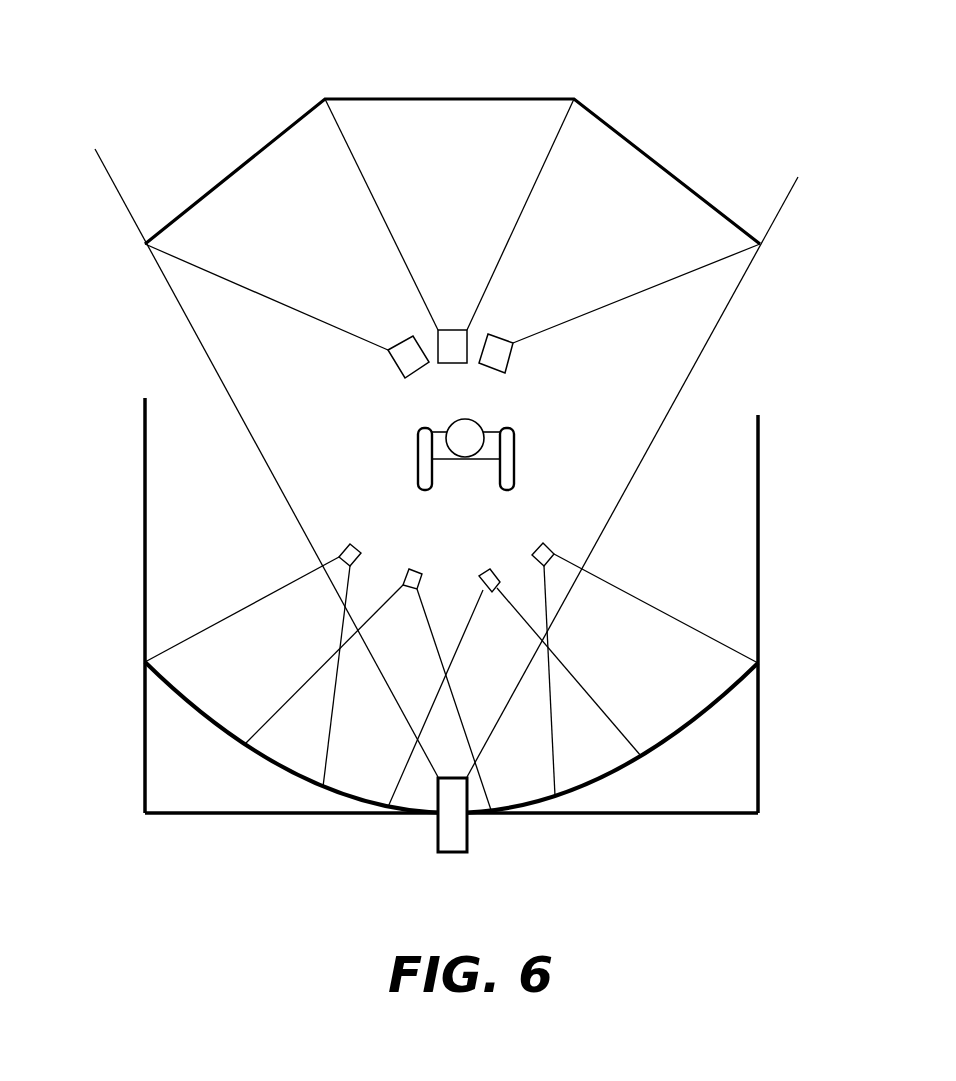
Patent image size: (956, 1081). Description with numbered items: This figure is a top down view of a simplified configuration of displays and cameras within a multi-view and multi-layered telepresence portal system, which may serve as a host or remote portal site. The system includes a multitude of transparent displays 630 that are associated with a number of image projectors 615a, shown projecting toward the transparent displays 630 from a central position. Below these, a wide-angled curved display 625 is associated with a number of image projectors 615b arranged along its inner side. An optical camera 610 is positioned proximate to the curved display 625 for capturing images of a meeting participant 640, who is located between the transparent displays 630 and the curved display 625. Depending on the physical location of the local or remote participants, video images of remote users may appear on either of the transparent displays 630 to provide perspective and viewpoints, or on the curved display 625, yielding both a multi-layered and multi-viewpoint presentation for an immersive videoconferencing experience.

The transparent displays 630 is at (480, 78).
The image projectors 615a is at (468, 372).
The meeting participant 640 is at (418, 447).
The image projectors 615b is at (427, 553).
The curved display 625 is at (229, 742).
The optical camera 610 is at (437, 836).